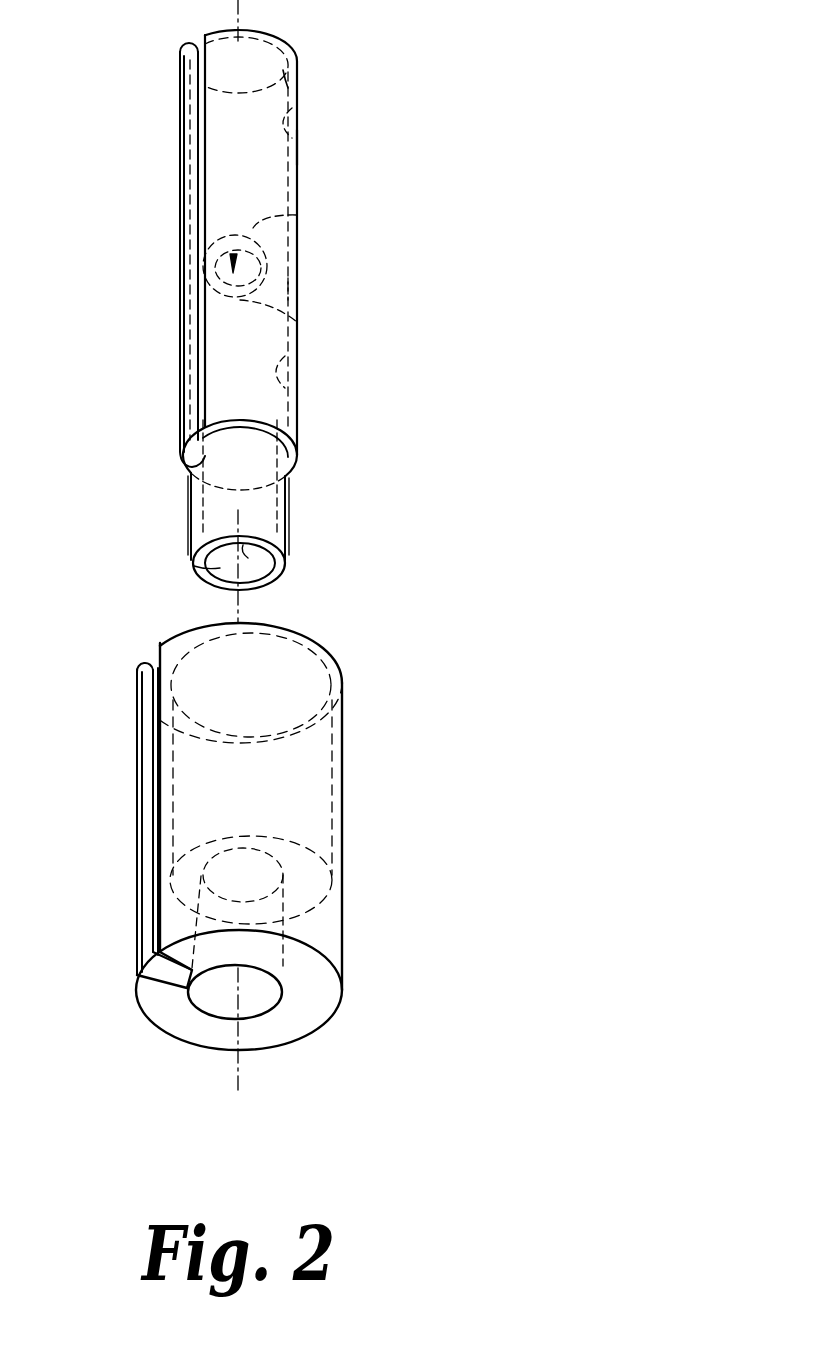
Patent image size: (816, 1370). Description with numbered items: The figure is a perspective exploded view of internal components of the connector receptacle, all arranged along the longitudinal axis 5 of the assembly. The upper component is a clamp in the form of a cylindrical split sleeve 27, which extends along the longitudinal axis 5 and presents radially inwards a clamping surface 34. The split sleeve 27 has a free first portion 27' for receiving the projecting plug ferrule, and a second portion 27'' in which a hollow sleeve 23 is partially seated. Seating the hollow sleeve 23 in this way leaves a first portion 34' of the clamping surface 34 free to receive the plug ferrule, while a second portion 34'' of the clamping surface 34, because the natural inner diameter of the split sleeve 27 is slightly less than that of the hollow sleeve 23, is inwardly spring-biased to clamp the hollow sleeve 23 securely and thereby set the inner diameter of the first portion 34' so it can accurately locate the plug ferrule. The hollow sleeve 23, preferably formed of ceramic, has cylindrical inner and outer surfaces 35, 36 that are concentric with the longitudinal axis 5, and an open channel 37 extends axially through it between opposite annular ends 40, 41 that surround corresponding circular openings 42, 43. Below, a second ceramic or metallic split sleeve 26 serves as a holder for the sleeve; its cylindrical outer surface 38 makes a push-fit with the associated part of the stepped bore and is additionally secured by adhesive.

The longitudinal axis 5 is at (238, 1068).
The hollow sleeve 23 is at (300, 499).
The second split sleeve 26 is at (354, 933).
The cylindrical split sleeve 27 is at (298, 248).
The free first portion 27' is at (362, 143).
The second portion 27'' is at (289, 447).
The clamping surface 34 is at (354, 289).
The first portion of the clamping surface 34' is at (357, 97).
The second portion of the clamping surface 34'' is at (344, 372).
The cylindrical inner surface 35 is at (198, 571).
The cylindrical outer surface 36 is at (286, 568).
The open channel 37 is at (300, 217).
The cylindrical outer surface 38 is at (335, 890).
The annular end 40 is at (193, 566).
The annular end 41 is at (297, 321).
The circular opening 42 is at (262, 532).
The circular opening 43 is at (296, 262).